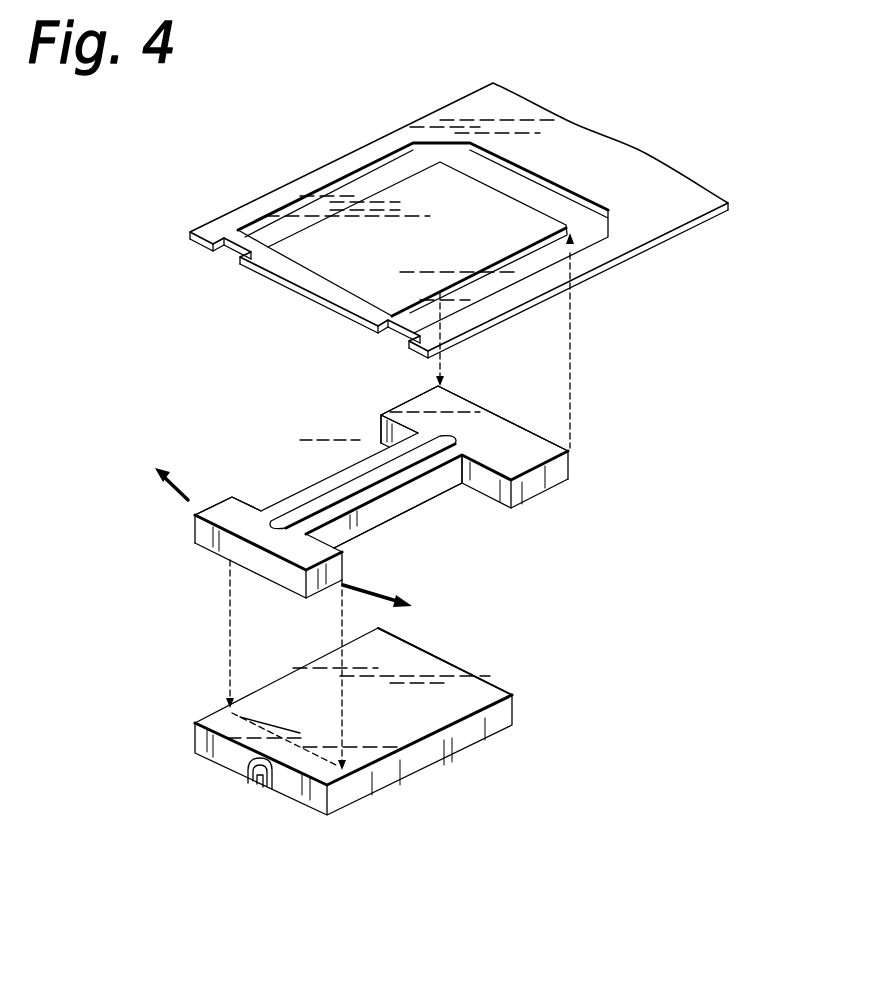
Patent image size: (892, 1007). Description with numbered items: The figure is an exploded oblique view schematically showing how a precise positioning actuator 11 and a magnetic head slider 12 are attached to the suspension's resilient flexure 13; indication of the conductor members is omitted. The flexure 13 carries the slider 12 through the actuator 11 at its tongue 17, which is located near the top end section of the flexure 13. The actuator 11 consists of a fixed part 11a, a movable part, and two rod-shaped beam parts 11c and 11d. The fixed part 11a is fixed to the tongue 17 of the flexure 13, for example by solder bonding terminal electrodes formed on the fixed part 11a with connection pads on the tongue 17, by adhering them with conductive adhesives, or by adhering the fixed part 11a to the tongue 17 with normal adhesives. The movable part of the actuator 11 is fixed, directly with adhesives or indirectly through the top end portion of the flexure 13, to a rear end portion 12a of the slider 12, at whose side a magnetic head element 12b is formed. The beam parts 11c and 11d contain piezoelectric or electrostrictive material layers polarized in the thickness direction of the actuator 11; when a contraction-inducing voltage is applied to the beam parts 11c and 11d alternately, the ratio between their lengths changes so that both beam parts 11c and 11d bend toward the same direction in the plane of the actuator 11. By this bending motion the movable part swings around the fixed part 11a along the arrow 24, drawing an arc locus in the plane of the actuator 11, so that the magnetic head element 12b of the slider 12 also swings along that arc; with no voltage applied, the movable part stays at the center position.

The flexure 13 is at (577, 149).
The tongue 17 is at (313, 240).
The actuator 11 is at (186, 541).
The fixed part 11a is at (392, 412).
The beam part 11c is at (350, 478).
The beam part 11d is at (230, 508).
The arrow 24 is at (172, 488).
The magnetic head slider 12 is at (456, 646).
The rear end portion 12a is at (327, 772).
The magnetic head element 12b is at (262, 786).